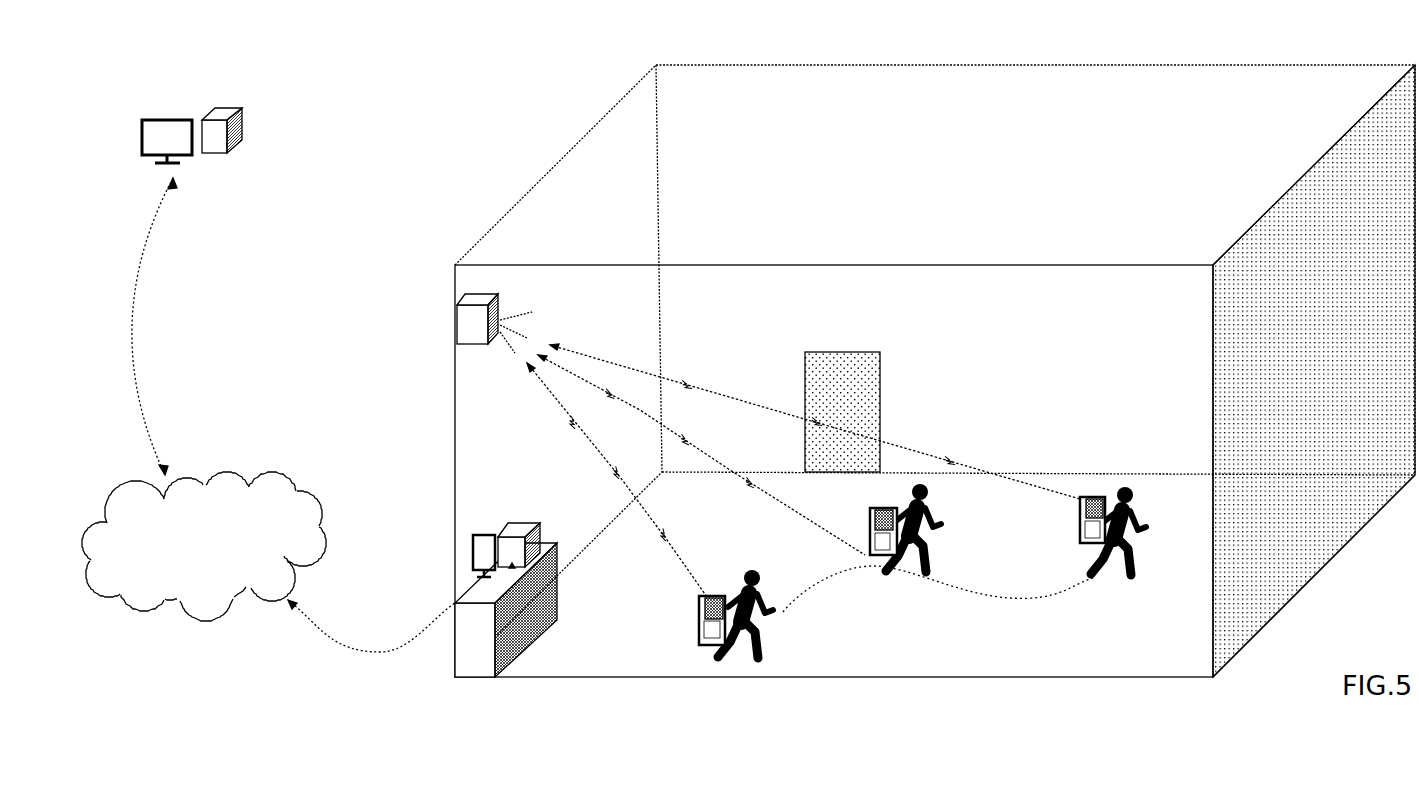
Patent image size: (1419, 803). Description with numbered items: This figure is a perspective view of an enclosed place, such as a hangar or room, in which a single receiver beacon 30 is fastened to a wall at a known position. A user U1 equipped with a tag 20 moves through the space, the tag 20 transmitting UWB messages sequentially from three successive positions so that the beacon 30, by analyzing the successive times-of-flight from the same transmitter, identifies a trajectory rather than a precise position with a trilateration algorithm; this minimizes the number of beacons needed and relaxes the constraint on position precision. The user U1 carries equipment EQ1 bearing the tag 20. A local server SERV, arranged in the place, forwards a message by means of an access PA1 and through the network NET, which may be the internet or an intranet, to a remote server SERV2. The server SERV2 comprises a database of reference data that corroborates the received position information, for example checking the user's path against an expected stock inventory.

The tag 20 is at (700, 603).
The receiver beacon 30 is at (468, 325).
The user equipment EQ1 is at (700, 637).
The user U1 is at (766, 636).
The local server SERV is at (506, 530).
The remote server SERV2 is at (175, 118).
The network NET is at (204, 546).
The access point PA1 is at (475, 610).